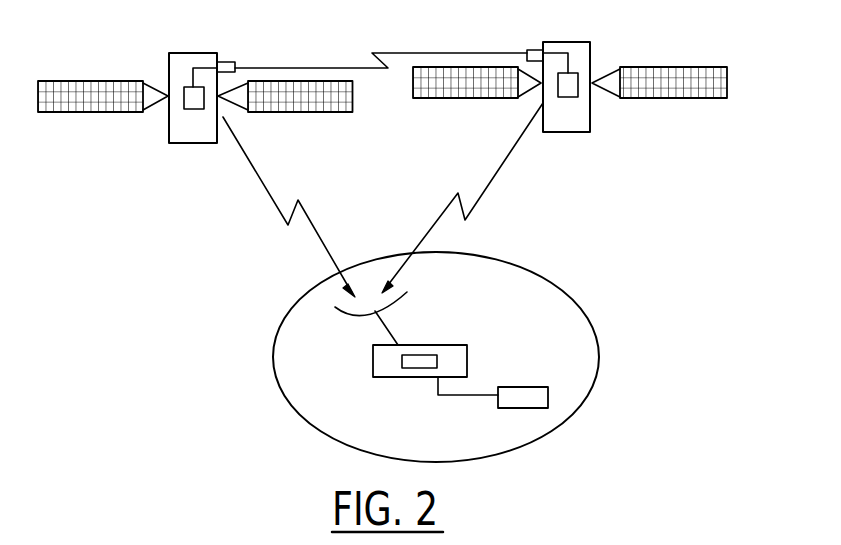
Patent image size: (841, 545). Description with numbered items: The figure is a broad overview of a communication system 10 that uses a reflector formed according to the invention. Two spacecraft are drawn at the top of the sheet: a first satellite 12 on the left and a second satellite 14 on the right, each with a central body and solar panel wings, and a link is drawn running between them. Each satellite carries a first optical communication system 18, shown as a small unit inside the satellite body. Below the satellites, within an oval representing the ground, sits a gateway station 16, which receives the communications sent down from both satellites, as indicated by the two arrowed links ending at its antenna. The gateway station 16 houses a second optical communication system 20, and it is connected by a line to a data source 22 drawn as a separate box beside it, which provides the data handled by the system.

The satellite communication system 10 is at (395, 232).
The first satellite 12 is at (198, 52).
The second satellite 14 is at (568, 42).
The gateway station 16 is at (467, 358).
The first optical communication system 18 is at (182, 110).
The second optical communication system 20 is at (440, 345).
The data source 22 is at (527, 387).